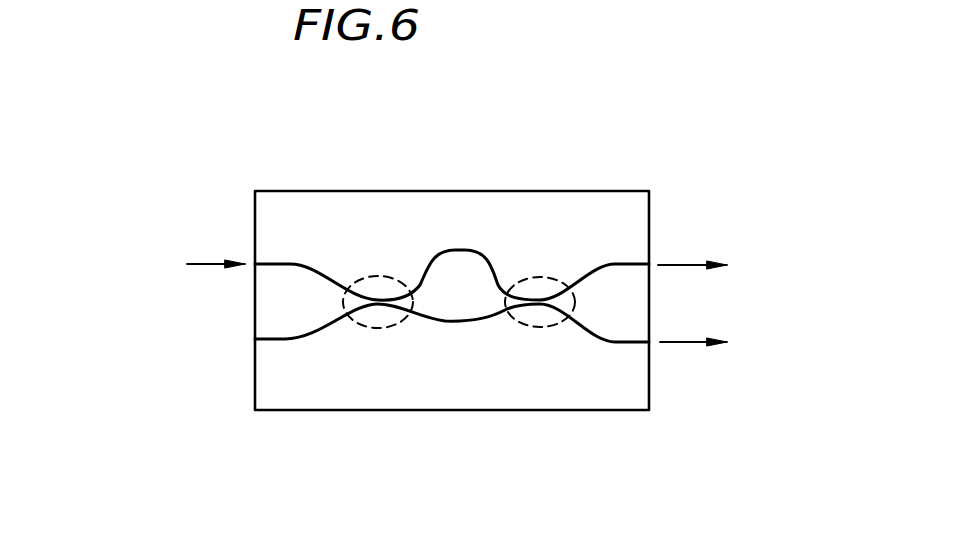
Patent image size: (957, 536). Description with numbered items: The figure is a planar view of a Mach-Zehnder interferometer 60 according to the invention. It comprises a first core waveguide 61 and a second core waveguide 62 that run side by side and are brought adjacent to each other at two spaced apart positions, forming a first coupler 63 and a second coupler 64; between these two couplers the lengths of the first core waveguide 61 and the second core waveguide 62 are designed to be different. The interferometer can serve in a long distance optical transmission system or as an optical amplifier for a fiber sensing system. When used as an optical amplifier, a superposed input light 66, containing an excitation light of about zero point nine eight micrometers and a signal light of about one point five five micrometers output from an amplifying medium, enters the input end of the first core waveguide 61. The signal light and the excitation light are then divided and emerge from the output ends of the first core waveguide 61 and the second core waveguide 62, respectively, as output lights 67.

The Mach-Zehnder interferometer 60 is at (518, 190).
The first core waveguide 61 is at (292, 263).
The second core waveguide 62 is at (297, 340).
The coupler 63 is at (384, 277).
The coupler 64 is at (527, 322).
The input light 66 is at (210, 264).
The output lights 67 is at (661, 264).